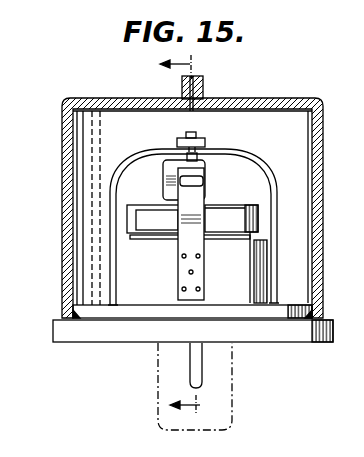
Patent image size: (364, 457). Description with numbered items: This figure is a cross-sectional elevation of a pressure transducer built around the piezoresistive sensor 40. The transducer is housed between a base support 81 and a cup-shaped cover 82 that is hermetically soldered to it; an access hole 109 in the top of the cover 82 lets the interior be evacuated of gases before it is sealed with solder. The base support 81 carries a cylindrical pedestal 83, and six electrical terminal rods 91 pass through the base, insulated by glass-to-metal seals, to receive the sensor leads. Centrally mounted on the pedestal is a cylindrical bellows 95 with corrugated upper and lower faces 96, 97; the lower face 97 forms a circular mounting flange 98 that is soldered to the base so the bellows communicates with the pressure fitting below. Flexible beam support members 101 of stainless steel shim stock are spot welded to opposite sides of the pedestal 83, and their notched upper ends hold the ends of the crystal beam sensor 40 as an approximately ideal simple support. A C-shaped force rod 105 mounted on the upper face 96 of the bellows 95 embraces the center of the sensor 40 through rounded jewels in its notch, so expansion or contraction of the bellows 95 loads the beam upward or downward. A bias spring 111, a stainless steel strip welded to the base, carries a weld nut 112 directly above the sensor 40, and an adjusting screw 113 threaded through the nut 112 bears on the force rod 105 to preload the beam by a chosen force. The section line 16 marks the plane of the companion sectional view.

The section line 16- 16 is at (175, 242).
The piezoresistive sensor 40 is at (204, 190).
The base support 81 is at (58, 332).
The cup-shaped cover 82 is at (62, 172).
The cylindrical pedestal 83 is at (260, 262).
The electrical terminal rods 91 is at (203, 368).
The cylindrical bellows 95 is at (250, 213).
The corrugated upper face 96 is at (227, 205).
The corrugated lower face 97 is at (178, 236).
The circular mounting flange 98 is at (214, 236).
The flexible beam support member 101 is at (178, 250).
The force rod 105 is at (167, 172).
The access hole 109 is at (204, 92).
The bias spring 111 is at (285, 138).
The weld nut 112 is at (200, 140).
The adjusting screw 113 is at (188, 136).